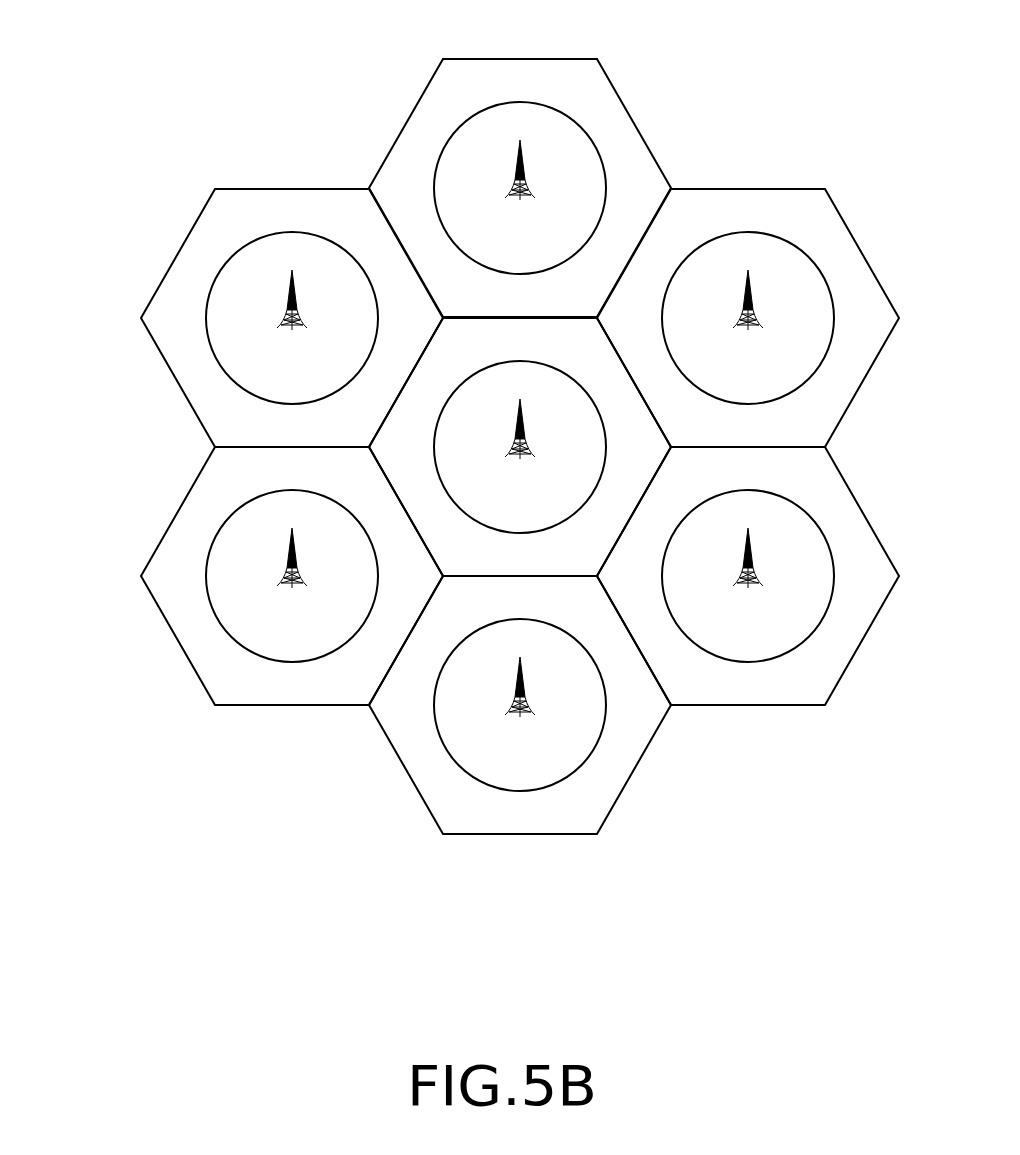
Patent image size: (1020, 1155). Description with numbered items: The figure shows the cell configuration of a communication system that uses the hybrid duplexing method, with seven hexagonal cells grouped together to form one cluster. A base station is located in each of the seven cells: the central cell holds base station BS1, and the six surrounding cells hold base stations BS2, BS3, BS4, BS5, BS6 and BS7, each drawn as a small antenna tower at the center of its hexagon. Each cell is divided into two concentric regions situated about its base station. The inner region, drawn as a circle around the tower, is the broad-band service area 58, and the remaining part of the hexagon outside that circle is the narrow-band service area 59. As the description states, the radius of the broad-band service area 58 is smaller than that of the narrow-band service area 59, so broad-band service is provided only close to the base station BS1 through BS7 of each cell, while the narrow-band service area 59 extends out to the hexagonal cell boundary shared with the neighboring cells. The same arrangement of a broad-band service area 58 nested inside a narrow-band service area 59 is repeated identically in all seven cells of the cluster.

The broad-band service area 58 is at (520, 446).
The narrow-band service area 59 is at (460, 421).
The base station BS1 is at (427, 343).
The base station BS2 is at (158, 278).
The base station BS3 is at (628, 117).
The base station BS4 is at (734, 188).
The base station BS5 is at (797, 705).
The base station BS6 is at (388, 738).
The base station BS7 is at (158, 538).